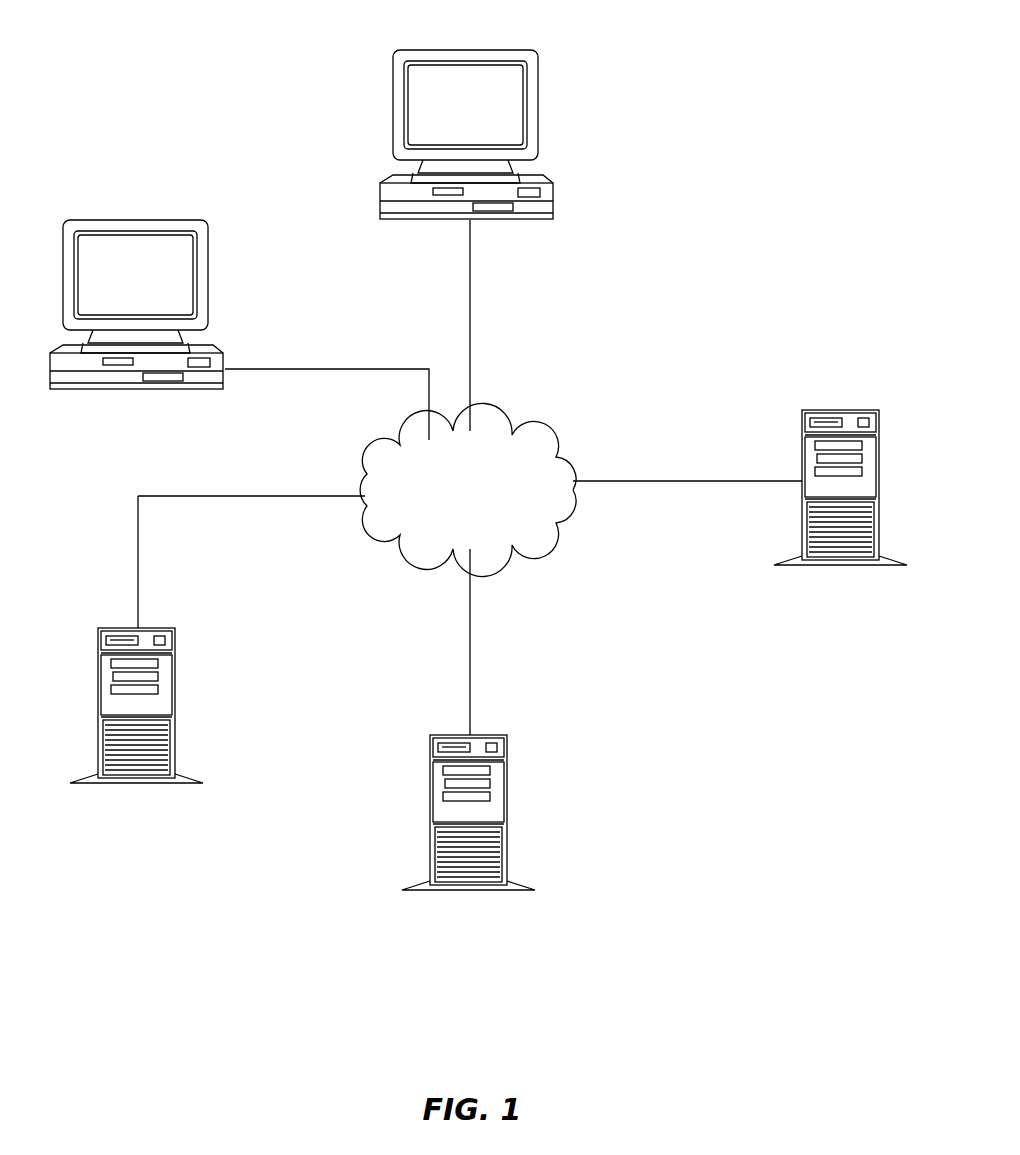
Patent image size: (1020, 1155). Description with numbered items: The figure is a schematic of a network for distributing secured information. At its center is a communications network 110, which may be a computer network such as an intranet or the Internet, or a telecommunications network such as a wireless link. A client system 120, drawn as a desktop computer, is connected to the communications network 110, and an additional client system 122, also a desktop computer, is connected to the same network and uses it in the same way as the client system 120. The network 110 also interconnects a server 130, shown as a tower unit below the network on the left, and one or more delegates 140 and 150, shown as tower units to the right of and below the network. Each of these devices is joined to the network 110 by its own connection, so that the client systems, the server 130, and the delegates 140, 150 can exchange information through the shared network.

The communications network 110 is at (522, 428).
The client system 120 is at (210, 268).
The additional client system 122 is at (540, 94).
The server 130 is at (118, 628).
The delegate 140 is at (825, 565).
The delegate 150 is at (448, 735).